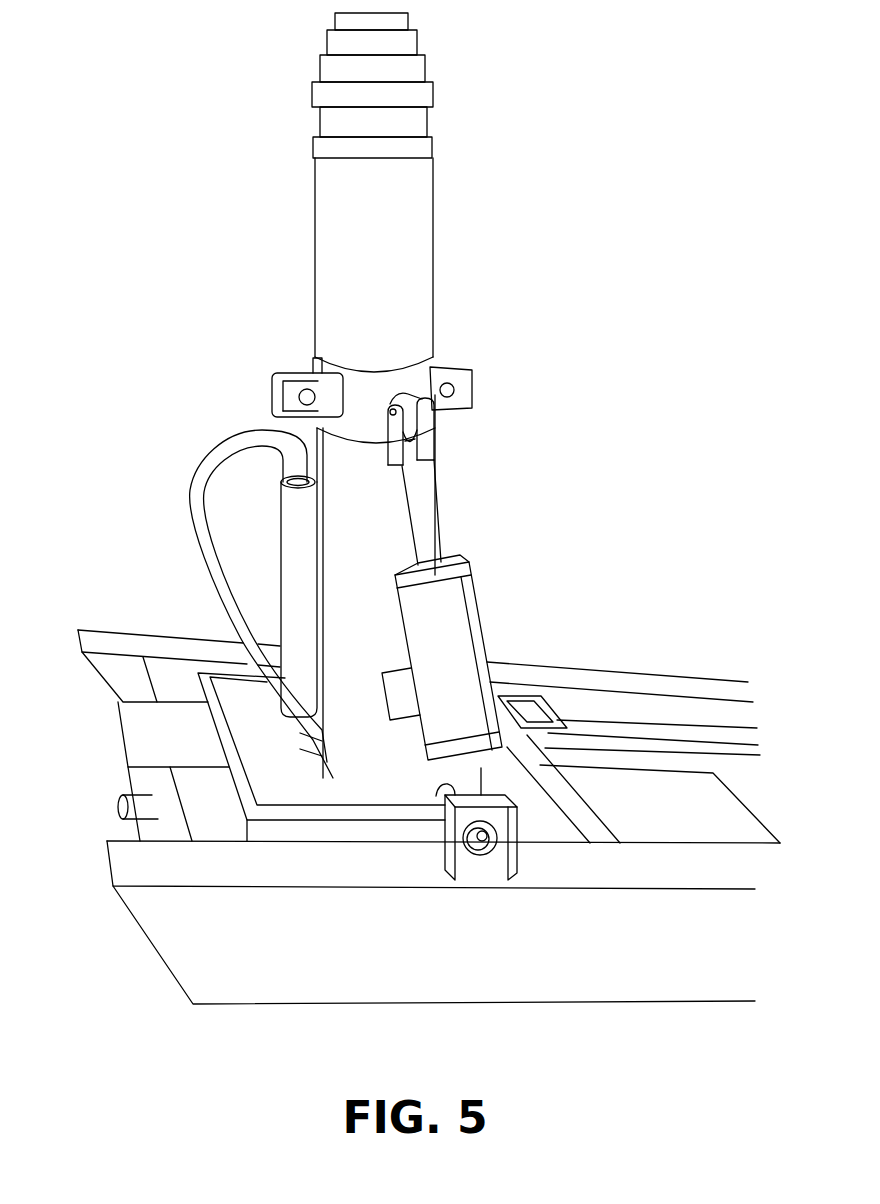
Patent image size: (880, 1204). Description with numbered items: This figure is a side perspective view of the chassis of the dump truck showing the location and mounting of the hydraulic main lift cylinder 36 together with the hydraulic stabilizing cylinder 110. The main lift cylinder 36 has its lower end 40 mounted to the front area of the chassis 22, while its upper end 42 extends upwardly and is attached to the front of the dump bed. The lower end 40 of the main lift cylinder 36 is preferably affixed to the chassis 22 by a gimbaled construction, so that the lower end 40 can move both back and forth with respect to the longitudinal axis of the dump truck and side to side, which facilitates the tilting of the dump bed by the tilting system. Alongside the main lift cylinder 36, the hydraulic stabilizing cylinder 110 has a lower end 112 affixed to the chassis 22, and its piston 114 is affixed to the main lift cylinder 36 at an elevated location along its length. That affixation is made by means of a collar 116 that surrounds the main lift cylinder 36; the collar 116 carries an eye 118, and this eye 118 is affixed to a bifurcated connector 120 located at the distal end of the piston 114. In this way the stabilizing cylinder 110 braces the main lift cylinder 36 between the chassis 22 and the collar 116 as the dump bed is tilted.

The chassis 22 is at (182, 942).
The hydraulic main lift cylinder 36 is at (420, 258).
The lower end 40 is at (428, 775).
The upper end 42 is at (435, 97).
The hydraulic stabilizing cylinder 110 is at (440, 622).
The lower end 112 is at (428, 775).
The piston 114 is at (417, 493).
The collar 116 is at (457, 367).
The eye 118 is at (407, 397).
The bifurcated connector 120 is at (437, 445).